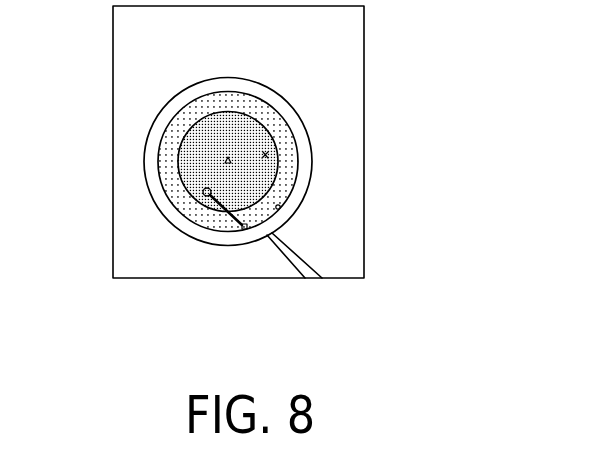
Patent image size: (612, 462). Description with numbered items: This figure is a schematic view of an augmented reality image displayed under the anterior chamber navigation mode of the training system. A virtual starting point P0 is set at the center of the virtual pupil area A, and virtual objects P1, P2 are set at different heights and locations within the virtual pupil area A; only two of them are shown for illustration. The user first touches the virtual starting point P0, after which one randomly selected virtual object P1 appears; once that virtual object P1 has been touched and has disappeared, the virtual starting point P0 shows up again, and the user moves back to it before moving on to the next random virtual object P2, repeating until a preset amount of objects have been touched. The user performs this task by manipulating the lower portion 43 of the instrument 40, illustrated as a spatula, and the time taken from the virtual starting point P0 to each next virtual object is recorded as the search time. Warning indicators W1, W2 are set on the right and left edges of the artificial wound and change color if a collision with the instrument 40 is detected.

The virtual pupil area A is at (220, 135).
The virtual starting point P0 is at (226, 160).
The virtual object P1 is at (203, 195).
The virtual object P2 is at (266, 154).
The warning indicator W1 is at (244, 230).
The warning indicator W2 is at (281, 207).
The lower portion 43 is at (204, 197).
The instrument 40 is at (296, 268).